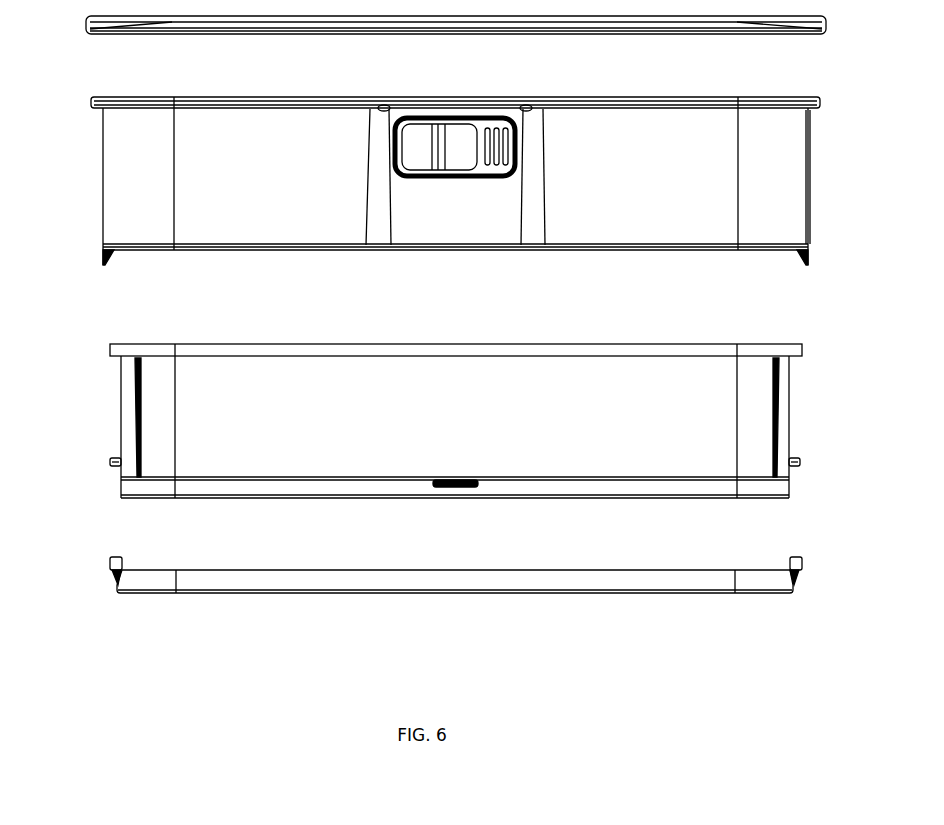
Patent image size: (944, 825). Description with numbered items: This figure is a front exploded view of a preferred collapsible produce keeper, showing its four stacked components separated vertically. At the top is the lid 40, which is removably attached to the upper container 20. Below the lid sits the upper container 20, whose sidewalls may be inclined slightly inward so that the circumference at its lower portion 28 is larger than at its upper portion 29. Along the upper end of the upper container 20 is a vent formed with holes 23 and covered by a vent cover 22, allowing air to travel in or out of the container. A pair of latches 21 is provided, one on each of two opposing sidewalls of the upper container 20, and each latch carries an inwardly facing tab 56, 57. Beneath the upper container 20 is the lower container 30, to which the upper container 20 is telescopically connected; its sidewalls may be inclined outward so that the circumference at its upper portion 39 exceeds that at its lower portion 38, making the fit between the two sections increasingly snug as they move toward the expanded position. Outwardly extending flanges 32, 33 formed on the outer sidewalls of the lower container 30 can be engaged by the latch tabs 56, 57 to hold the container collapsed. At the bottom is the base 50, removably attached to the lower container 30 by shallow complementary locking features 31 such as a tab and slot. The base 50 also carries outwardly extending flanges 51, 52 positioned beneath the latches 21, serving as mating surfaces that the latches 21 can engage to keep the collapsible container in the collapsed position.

The upper container 20 is at (608, 220).
The latches 21 is at (102, 256).
The vent cover 22 is at (426, 133).
The holes 23 is at (497, 135).
The lower portion 28 is at (806, 240).
The upper portion 29 is at (809, 115).
The lower container 30 is at (242, 442).
The locking features 31 is at (462, 488).
The flange 32 is at (801, 462).
The flange 33 is at (110, 462).
The lower portion 38 is at (783, 493).
The upper portion 39 is at (790, 370).
The lid 40 is at (610, 28).
The base 50 is at (652, 580).
The mating surface 51 is at (797, 575).
The flange 52 is at (110, 556).
The inwardly facing tab 56 is at (110, 266).
The inwardly facing tab 57 is at (800, 266).